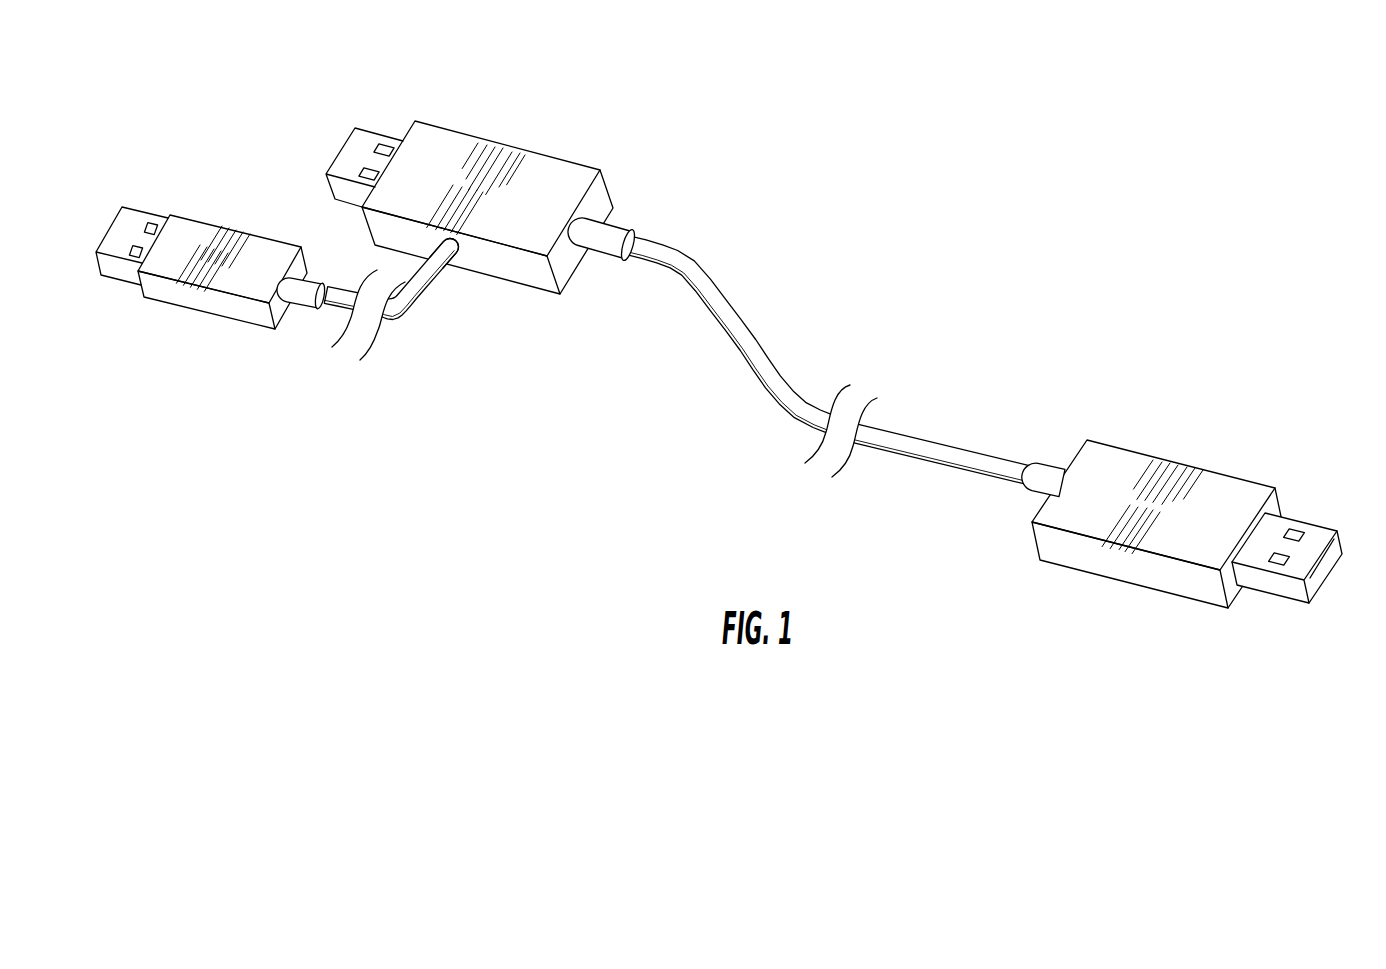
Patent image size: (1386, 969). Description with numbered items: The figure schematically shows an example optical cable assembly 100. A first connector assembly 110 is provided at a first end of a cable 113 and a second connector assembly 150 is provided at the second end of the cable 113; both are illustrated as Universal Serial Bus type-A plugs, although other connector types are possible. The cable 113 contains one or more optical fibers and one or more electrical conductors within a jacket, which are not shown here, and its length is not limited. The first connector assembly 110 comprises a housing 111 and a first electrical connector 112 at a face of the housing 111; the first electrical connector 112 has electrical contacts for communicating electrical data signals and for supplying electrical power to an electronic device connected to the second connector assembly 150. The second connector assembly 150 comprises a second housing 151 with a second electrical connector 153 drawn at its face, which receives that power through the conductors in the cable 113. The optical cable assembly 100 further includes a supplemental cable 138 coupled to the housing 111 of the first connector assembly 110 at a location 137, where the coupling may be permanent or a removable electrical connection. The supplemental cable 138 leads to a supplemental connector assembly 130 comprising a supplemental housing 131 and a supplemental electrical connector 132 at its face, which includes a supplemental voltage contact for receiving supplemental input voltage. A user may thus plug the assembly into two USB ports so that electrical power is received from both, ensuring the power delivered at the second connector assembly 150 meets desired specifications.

The optical cable assembly 100 is at (731, 332).
The first connector assembly 110 is at (484, 179).
The housing 111 is at (443, 122).
The first electrical connector 112 is at (380, 123).
The cable 113 is at (735, 308).
The supplemental connector assembly 130 is at (201, 300).
The supplemental housing 131 is at (203, 313).
The supplemental electrical connector 132 is at (142, 212).
The location 137 is at (463, 243).
The supplemental cable 138 is at (415, 320).
The second connector assembly 150 is at (1199, 497).
The second housing 151 is at (1117, 444).
The third USB plug 153 is at (1302, 518).